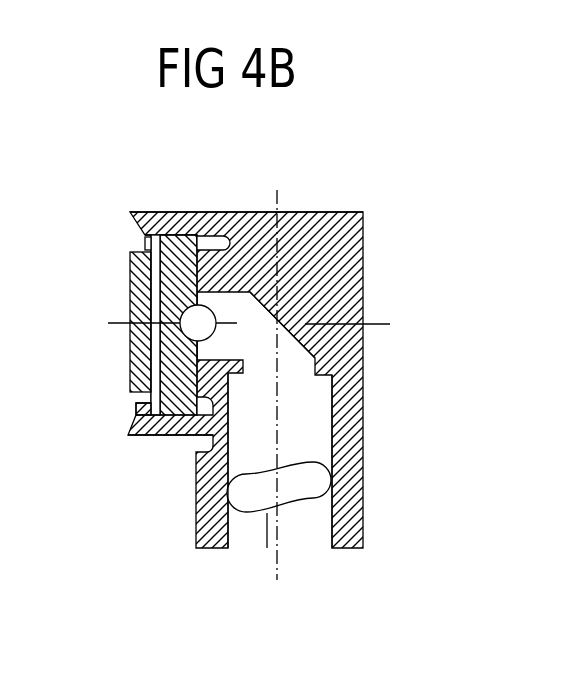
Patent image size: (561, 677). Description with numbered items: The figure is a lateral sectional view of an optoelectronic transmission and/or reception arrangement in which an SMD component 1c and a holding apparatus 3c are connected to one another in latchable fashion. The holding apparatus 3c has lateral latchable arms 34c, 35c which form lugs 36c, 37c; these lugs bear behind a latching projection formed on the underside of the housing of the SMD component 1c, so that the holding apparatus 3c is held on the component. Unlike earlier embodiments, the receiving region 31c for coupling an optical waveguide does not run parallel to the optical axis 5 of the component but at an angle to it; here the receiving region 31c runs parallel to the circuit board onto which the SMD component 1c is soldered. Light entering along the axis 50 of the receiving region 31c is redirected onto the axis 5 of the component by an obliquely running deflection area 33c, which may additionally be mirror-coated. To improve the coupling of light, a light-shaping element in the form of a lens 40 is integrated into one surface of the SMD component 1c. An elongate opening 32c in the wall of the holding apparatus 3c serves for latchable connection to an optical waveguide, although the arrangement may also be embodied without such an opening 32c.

The SMD component 1c is at (128, 300).
The holding apparatus 3c is at (315, 223).
The axis of the component 5 is at (390, 324).
The receiving region 31c is at (307, 535).
The elongate opening 32c is at (317, 463).
The deflection area 33c is at (297, 343).
The latchable arm 34c is at (158, 212).
The latchable arm 35c is at (155, 437).
The lug 36c is at (143, 244).
The lug 37c is at (136, 411).
The lens 40 is at (183, 328).
The axis 50 is at (272, 565).